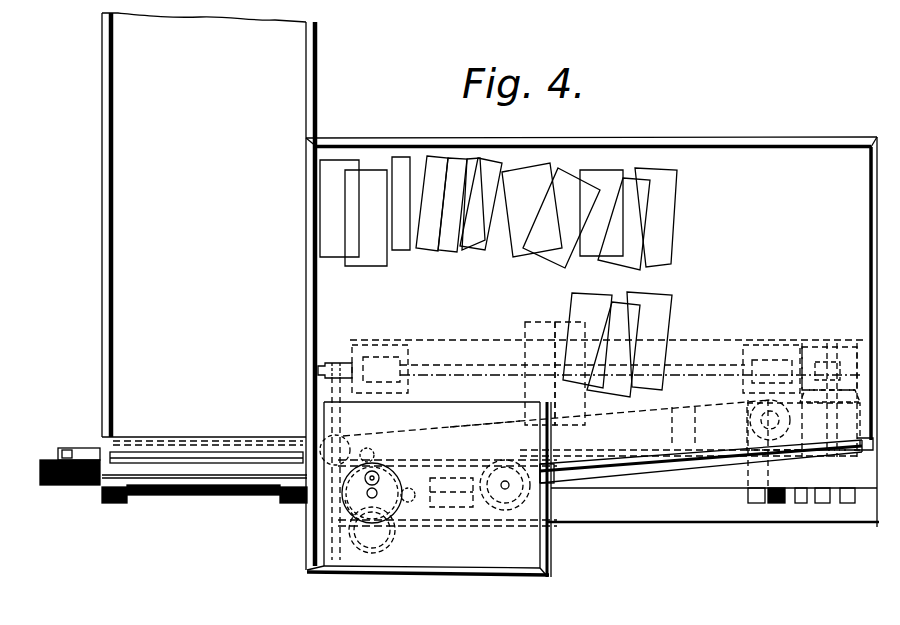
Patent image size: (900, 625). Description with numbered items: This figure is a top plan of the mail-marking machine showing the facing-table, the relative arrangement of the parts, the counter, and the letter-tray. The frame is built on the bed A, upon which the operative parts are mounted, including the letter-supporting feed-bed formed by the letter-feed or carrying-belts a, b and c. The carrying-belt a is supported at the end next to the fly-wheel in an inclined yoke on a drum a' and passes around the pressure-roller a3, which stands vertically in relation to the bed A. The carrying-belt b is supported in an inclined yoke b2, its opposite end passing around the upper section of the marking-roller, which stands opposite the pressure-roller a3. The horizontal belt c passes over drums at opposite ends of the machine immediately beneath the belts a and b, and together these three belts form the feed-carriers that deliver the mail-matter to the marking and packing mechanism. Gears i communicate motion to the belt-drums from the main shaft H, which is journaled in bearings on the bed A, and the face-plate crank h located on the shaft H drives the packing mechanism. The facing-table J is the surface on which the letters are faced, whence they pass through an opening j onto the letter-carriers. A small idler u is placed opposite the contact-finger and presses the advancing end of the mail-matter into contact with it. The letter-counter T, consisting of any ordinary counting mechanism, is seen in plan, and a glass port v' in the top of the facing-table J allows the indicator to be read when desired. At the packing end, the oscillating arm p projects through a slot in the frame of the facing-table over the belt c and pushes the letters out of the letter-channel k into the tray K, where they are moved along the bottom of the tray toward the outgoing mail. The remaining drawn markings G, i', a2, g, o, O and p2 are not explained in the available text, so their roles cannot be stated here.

The tray K is at (204, 229).
The facing-table J is at (591, 332).
The card feed guide G is at (560, 350).
The main shaft H is at (688, 378).
The gears i is at (829, 398).
The hopper i' is at (803, 420).
The drum a' is at (751, 420).
The carrying-belt a is at (556, 422).
The inclined rod a2 is at (485, 423).
The opening j is at (672, 447).
The stop g is at (573, 470).
The bed A is at (709, 480).
The letter-counter T is at (375, 493).
The idler u is at (370, 455).
The pressure-roller a3 is at (320, 443).
The small pulley o is at (408, 502).
The pulley O is at (382, 540).
The carrying-belt b is at (418, 522).
The inclined yoke b2 is at (460, 492).
The face-plate crank h is at (520, 503).
The glass port v' is at (305, 523).
The oscillating arm p is at (204, 488).
The tray bar p2 is at (176, 505).
The horizontal belt c is at (70, 479).
The letter-channel k is at (135, 520).